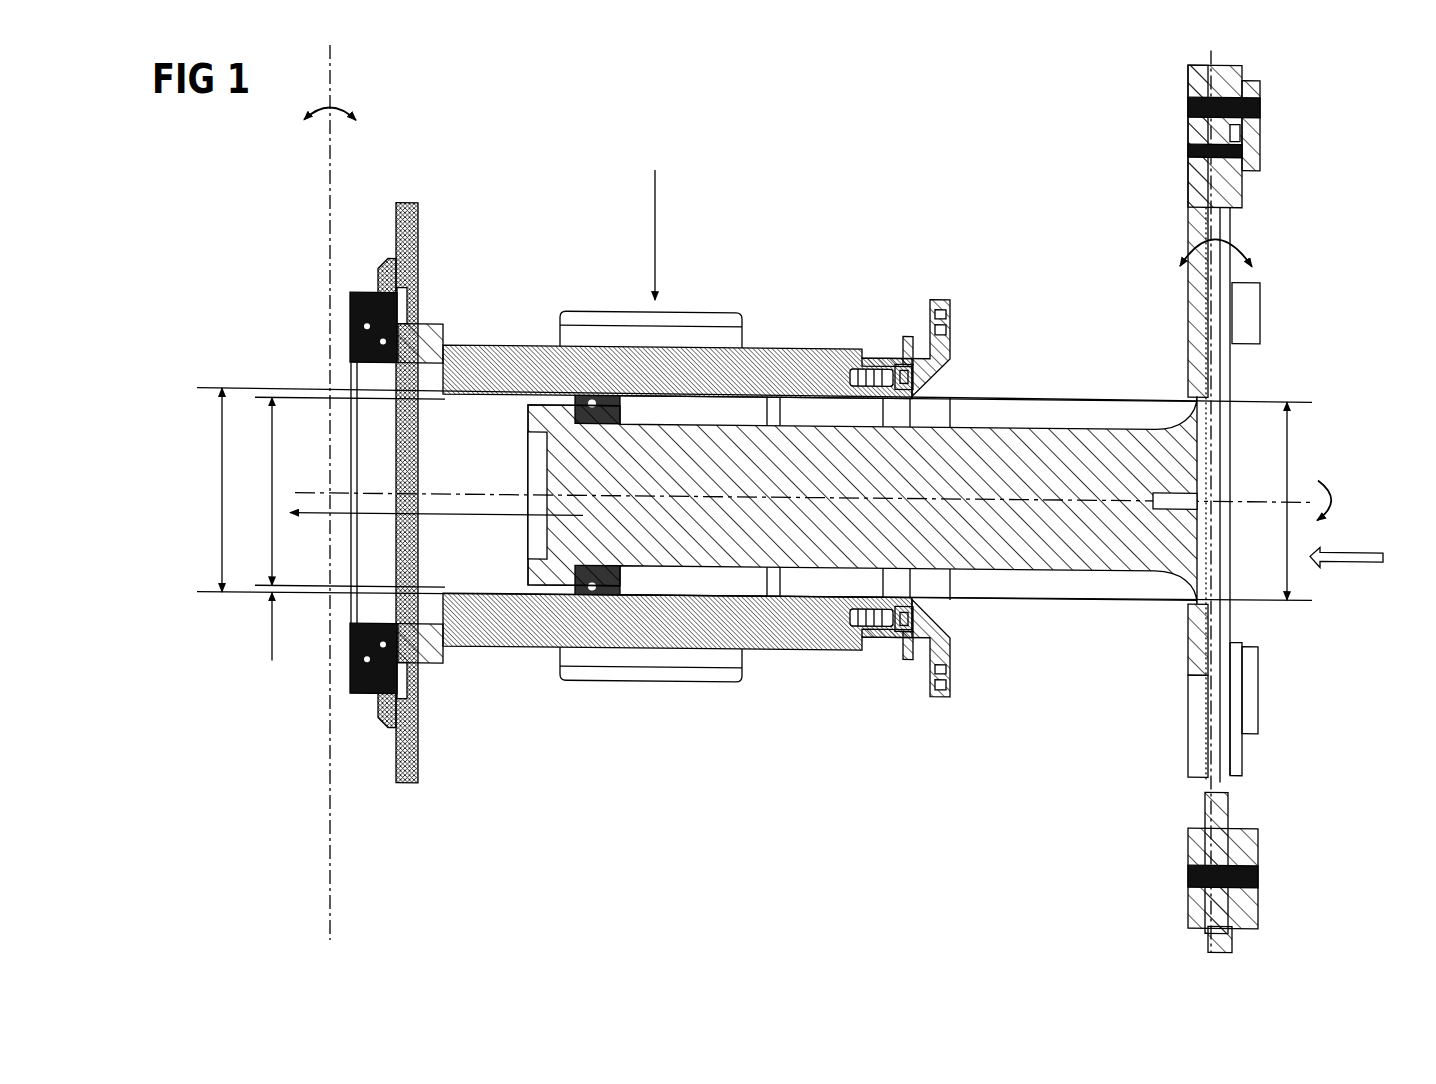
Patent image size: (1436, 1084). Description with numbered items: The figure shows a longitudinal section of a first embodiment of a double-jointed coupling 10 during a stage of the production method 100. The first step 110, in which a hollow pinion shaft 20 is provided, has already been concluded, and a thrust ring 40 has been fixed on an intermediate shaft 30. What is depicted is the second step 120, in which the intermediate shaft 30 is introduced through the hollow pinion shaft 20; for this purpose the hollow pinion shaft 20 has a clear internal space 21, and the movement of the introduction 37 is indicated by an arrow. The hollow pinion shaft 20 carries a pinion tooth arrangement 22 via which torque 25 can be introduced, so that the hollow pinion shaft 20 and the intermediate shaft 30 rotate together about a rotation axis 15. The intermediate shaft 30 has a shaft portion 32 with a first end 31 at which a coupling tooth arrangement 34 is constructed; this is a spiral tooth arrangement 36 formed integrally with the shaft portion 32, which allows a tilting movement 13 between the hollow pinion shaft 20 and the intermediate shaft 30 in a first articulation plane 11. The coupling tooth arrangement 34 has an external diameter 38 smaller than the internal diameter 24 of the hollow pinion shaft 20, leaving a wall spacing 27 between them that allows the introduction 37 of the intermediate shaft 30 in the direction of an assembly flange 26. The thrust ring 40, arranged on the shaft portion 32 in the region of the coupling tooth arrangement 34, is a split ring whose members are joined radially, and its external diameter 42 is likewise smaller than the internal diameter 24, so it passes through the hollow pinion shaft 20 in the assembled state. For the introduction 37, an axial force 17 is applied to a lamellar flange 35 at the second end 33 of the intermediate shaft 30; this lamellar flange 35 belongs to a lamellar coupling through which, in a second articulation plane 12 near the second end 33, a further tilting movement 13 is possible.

The double-jointed coupling 10 is at (262, 200).
The method 100 is at (268, 318).
The first articulation plane 11 is at (330, 76).
The tilting movement 13 is at (336, 107).
The assembly flange 26 is at (350, 343).
The clear internal space 21 is at (503, 415).
The thrust ring 40 is at (605, 403).
The torque 25 is at (655, 195).
The pinion tooth arrangement 22 is at (687, 310).
The hollow pinion shaft 20 is at (860, 469).
The first step 110 is at (798, 362).
The intermediate shaft 30 is at (862, 423).
The shaft portion 32 is at (1057, 437).
The first end 31 is at (527, 467).
The coupling tooth arrangement 34 is at (570, 603).
The spiral tooth arrangement 36 is at (545, 583).
The introduction 37 is at (818, 562).
The second step 120 is at (458, 650).
The rotation axis 15 is at (1257, 503).
The second articulation plane 12 is at (1220, 787).
The second end 33 is at (1263, 393).
The lamellar flange 35 is at (1240, 187).
The internal diameter 24 is at (222, 458).
The external diameter 38 is at (272, 552).
The wall spacing 27 is at (268, 592).
The external diameter 42 is at (1290, 463).
The axial force 17 is at (1340, 565).